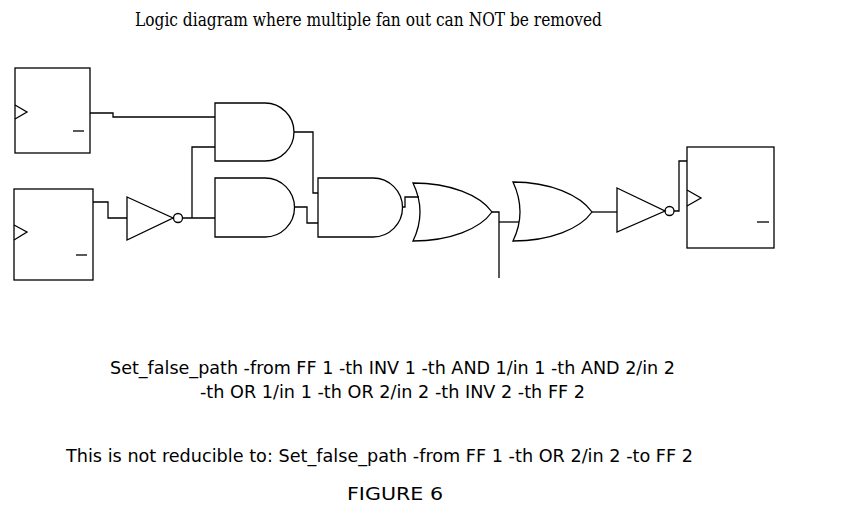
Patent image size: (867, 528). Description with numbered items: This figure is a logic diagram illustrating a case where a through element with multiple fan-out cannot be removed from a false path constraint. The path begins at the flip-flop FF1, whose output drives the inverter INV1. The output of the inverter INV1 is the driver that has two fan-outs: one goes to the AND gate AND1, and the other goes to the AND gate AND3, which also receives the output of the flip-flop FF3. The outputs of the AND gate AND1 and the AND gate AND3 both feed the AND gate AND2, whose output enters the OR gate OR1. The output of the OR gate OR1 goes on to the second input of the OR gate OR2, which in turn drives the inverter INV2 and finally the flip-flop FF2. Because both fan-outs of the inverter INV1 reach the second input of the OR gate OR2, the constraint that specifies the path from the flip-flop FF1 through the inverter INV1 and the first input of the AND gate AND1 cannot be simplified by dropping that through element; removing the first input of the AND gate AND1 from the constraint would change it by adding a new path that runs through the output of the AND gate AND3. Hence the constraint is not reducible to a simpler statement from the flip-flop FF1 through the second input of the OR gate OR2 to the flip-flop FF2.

The flip-flop FF 3 FF3 is at (52, 122).
The flip-flop FF 1 FF1 is at (53, 244).
The inverter INV 1 INV1 is at (155, 224).
The AND gate AND3 is at (254, 132).
The AND gate AND1 is at (255, 207).
The AND gate AND2 is at (360, 207).
The OR gate OR1 is at (452, 212).
The OR gate OR2 is at (552, 211).
The inverter INV 2 INV2 is at (645, 214).
The flip-flop FF 2 FF2 is at (730, 208).